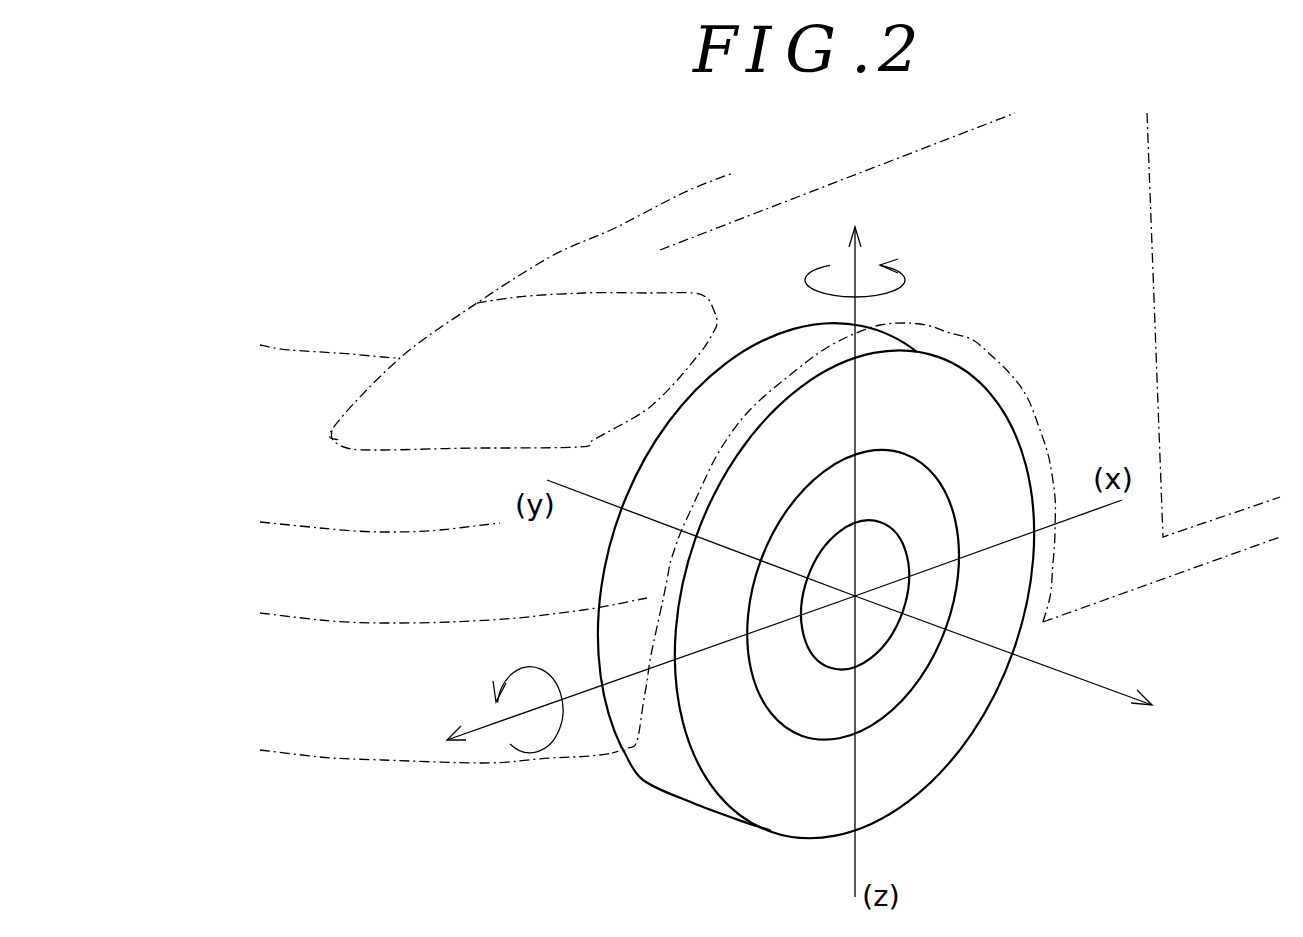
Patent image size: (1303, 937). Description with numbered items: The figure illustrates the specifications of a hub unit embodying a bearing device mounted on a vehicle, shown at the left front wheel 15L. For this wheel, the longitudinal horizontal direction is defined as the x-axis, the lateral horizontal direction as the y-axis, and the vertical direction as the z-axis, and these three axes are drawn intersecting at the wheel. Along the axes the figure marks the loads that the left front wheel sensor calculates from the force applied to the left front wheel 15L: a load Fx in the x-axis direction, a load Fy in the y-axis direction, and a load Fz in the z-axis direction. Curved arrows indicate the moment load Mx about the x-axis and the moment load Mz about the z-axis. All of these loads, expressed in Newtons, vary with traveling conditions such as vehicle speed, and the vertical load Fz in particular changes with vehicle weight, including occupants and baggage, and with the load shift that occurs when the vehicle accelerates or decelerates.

The left front wheel 15L is at (980, 380).
The load in the z-axis direction Fz is at (852, 392).
The load in the y-axis direction Fy is at (1022, 665).
The load in the x-axis direction Fx is at (630, 678).
The moment load about the z-axis Mz is at (878, 278).
The moment load about the x-axis Mx is at (528, 691).